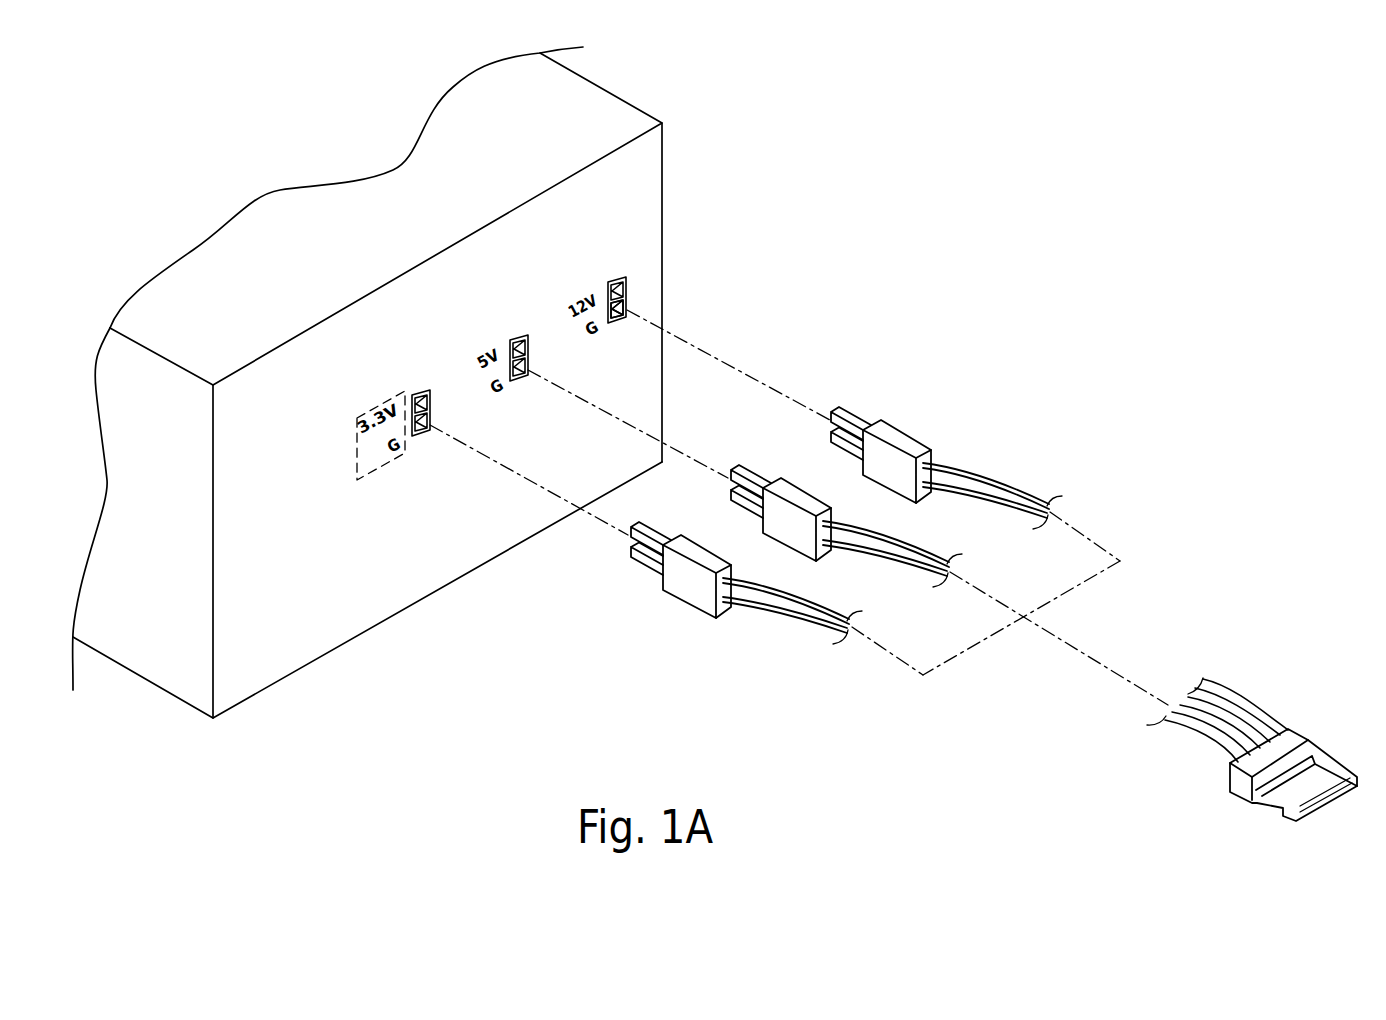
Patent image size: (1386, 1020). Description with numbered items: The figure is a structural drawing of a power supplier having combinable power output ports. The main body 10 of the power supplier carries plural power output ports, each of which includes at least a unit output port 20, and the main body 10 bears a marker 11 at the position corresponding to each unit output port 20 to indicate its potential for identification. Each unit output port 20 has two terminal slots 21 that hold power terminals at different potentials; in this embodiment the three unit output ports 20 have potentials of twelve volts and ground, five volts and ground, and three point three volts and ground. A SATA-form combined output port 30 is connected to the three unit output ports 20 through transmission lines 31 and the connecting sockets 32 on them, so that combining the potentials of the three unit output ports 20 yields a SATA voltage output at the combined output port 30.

The main body 10 is at (595, 110).
The marker 11 is at (390, 462).
The unit output port 20 is at (627, 288).
The terminal slot 21 is at (615, 320).
The SATA-form combined output port 30 is at (1317, 758).
The transmission line 31 is at (1005, 490).
The connecting socket 32 is at (900, 443).